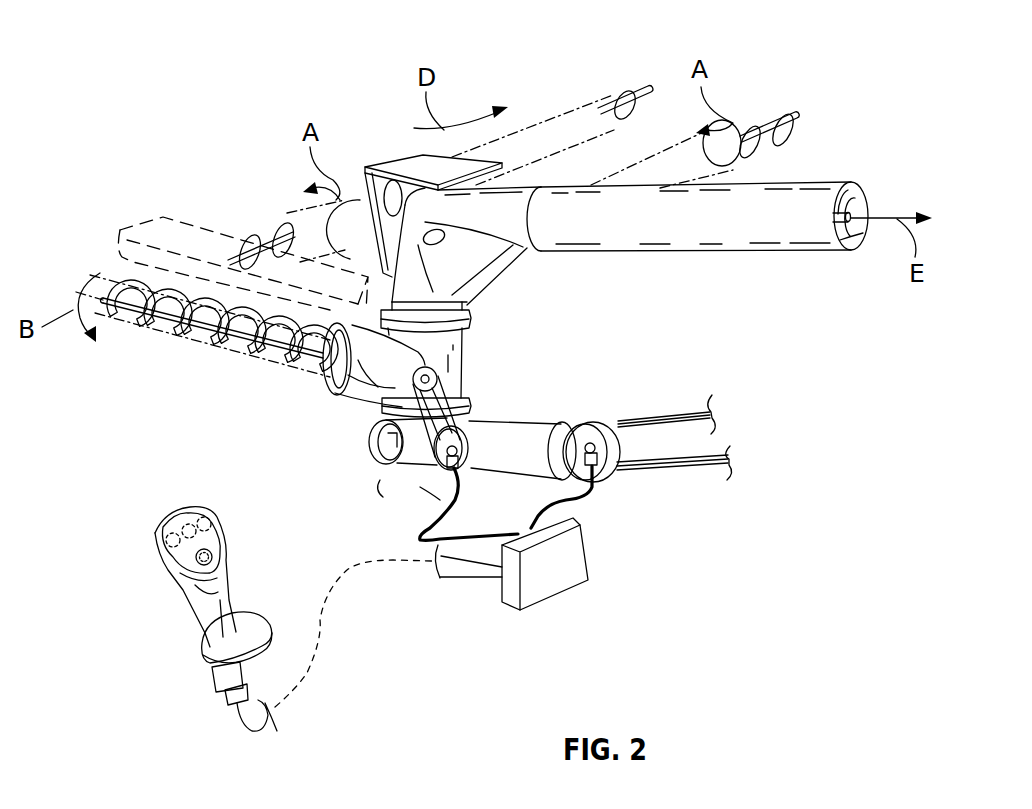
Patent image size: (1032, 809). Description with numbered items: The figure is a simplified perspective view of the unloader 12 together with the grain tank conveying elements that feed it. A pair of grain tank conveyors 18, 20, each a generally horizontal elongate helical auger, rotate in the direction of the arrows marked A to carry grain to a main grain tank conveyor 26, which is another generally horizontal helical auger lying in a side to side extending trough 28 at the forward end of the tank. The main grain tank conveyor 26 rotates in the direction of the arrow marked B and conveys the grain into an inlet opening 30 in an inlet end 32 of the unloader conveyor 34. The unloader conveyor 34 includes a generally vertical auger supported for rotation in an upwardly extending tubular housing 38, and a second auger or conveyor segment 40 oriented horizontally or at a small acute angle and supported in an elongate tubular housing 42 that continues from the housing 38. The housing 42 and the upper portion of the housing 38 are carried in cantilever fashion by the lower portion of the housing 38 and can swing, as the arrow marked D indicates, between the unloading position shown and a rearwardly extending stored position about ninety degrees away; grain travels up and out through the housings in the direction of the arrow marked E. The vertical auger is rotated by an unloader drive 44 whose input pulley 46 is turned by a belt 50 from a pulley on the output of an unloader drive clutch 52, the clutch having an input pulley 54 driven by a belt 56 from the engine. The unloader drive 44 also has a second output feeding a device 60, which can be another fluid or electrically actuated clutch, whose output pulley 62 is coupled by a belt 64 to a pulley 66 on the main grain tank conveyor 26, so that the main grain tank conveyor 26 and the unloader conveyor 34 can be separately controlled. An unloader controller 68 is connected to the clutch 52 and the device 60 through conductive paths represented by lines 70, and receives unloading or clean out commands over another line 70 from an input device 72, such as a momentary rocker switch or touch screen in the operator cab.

The unloader 12 is at (282, 48).
The grain tank conveyor 18 is at (785, 103).
The grain tank conveyor 20 is at (643, 72).
The main grain tank conveyor 26 is at (124, 338).
The trough 28 is at (230, 363).
The inlet opening 30 is at (325, 385).
The inlet end 32 is at (378, 398).
The unloader conveyor 34 is at (478, 346).
The tubular housing 38 is at (476, 395).
The auger or conveyor segment 40 is at (865, 197).
The tubular housing 42 is at (827, 252).
The unloader drive 44 is at (407, 467).
The input pulley 46 is at (373, 457).
The belt 50 is at (561, 420).
The unloader drive clutch 52 is at (612, 475).
The input pulley 54 is at (607, 417).
The belt 56 is at (697, 403).
The device 60 is at (434, 480).
The output pulley 62 is at (472, 455).
The belt 64 is at (467, 365).
The pulley 66 is at (472, 317).
The unloader controller 68 is at (588, 560).
The lines 70 is at (444, 500).
The input device 72 is at (180, 513).